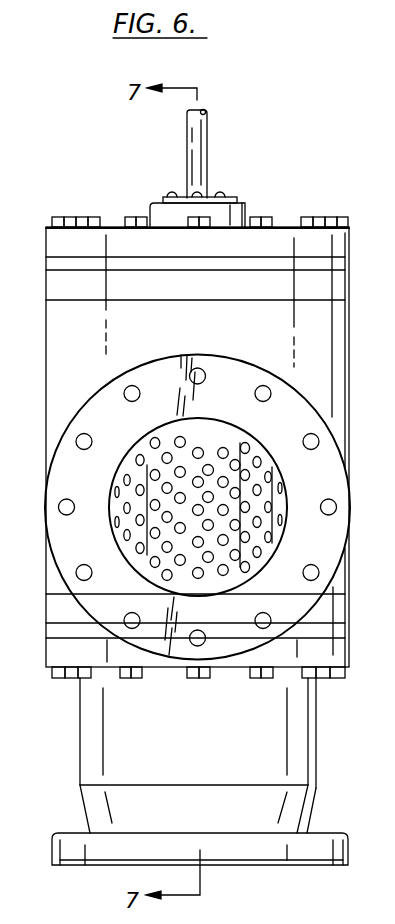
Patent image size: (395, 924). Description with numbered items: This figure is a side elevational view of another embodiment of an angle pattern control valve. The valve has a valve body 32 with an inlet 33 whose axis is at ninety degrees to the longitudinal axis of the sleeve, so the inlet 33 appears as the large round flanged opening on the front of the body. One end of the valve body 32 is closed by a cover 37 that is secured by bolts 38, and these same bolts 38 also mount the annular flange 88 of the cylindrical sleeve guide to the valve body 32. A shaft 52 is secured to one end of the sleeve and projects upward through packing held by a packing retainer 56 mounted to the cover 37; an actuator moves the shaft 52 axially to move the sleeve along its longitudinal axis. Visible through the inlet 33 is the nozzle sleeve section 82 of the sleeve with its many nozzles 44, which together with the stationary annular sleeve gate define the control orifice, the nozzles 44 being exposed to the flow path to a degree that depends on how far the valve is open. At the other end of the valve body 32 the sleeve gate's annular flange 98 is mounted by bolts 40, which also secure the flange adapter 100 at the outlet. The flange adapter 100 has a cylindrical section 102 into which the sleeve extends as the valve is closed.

The valve body 32 is at (352, 331).
The inlet 33 is at (283, 474).
The cover 37 is at (343, 235).
The bolts 38 is at (128, 217).
The bolts 40 is at (257, 679).
The nozzles 44 is at (236, 460).
The shaft 52 is at (206, 116).
The packing retainer 56 is at (235, 200).
The nozzle sleeve section 82 is at (214, 583).
The annular flange 88 is at (338, 262).
The annular flange 98 is at (340, 630).
The flange adapter 100 is at (322, 792).
The cylindrical section 102 is at (318, 748).